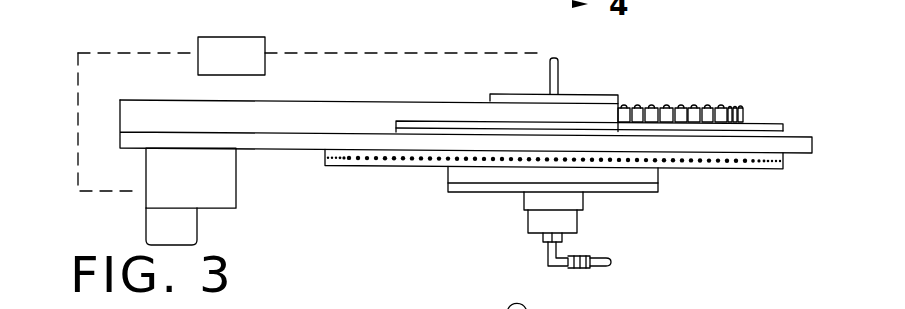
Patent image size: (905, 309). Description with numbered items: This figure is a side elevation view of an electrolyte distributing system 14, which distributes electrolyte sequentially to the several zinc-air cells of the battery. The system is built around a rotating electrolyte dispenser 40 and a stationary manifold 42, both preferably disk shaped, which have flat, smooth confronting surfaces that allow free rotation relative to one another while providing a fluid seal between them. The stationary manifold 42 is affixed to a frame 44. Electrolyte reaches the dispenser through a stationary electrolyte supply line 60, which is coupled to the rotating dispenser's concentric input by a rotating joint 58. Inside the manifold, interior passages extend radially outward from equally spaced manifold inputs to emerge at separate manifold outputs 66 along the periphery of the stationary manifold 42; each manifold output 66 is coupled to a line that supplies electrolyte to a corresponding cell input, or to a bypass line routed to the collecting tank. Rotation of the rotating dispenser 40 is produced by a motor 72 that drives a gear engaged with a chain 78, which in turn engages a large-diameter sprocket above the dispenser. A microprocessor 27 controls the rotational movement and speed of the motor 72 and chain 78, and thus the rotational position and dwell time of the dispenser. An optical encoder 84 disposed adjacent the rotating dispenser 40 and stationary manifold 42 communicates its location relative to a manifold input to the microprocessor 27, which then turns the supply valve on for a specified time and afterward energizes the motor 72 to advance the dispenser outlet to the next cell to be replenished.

The electrolyte distributing system 14 is at (101, 56).
The microprocessor 27 is at (237, 37).
The rotating electrolyte dispenser 40 is at (782, 134).
The stationary manifold 42 is at (764, 168).
The frame 44 is at (128, 140).
The rotating joint 58 is at (572, 221).
The stationary electrolyte supply line 60 is at (607, 262).
The manifold output 66 is at (381, 166).
The motor 72 is at (134, 199).
The chain 78 is at (695, 107).
The optical encoder 84 is at (597, 86).